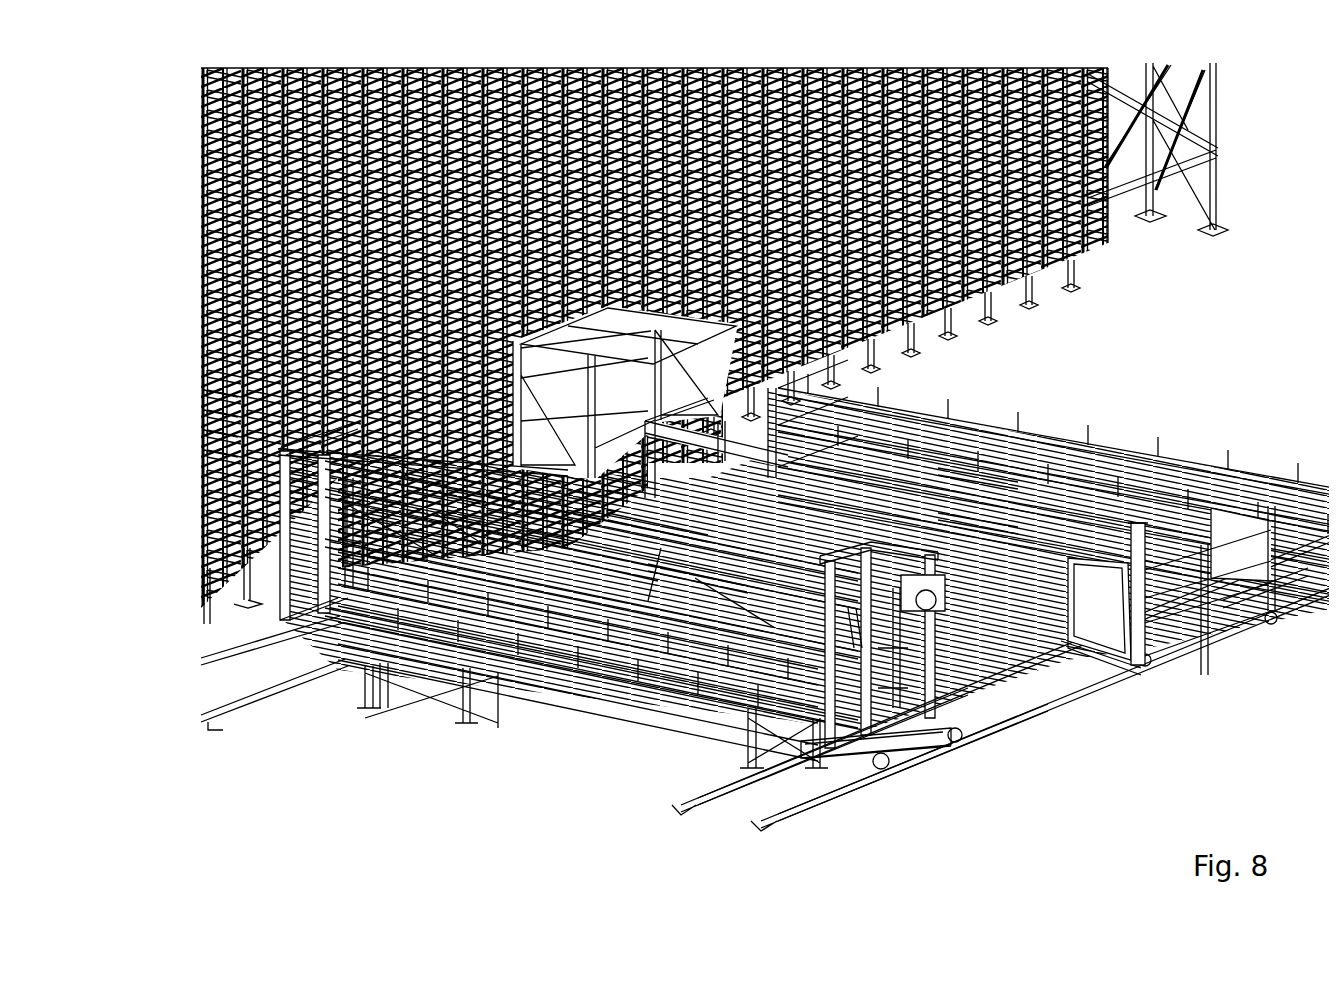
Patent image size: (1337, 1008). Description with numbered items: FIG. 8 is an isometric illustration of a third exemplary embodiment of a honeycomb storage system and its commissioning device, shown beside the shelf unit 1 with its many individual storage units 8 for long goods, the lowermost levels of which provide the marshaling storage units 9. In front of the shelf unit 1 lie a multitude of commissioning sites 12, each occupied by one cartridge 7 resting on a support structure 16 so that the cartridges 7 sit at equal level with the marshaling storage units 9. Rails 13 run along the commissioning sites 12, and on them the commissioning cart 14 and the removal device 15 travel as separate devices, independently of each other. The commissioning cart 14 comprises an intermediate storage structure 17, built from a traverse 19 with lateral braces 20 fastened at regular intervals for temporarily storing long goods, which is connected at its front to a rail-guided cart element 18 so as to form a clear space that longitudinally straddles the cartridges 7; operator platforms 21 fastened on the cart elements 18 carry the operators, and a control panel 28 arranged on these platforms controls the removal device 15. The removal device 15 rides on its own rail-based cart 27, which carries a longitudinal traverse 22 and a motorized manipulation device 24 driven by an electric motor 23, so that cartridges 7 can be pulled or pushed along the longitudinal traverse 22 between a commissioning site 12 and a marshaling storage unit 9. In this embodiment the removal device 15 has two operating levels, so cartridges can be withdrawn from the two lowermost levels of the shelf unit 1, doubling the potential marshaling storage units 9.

The shelf unit 1 is at (195, 152).
The cartridge 7 is at (440, 668).
The storage units 8 is at (222, 490).
The marshaling storage units 9 is at (210, 610).
The commissioning sites 12 is at (742, 722).
The rails 13 is at (210, 700).
The commissioning cart 14 is at (1138, 572).
The removal device 15 is at (883, 685).
The support structure 16 is at (380, 692).
The intermediate storage structure 17 is at (1057, 505).
The cart element 18 is at (1100, 655).
The traverse 19 is at (958, 492).
The lateral braces 20 is at (962, 515).
The operator platforms 21 is at (1218, 596).
The longitudinal traverse 22 is at (612, 510).
The electric motor 23 is at (930, 640).
The manipulation device 24 is at (665, 560).
The rail-based cart 27 is at (890, 675).
The control panel 28 is at (745, 412).